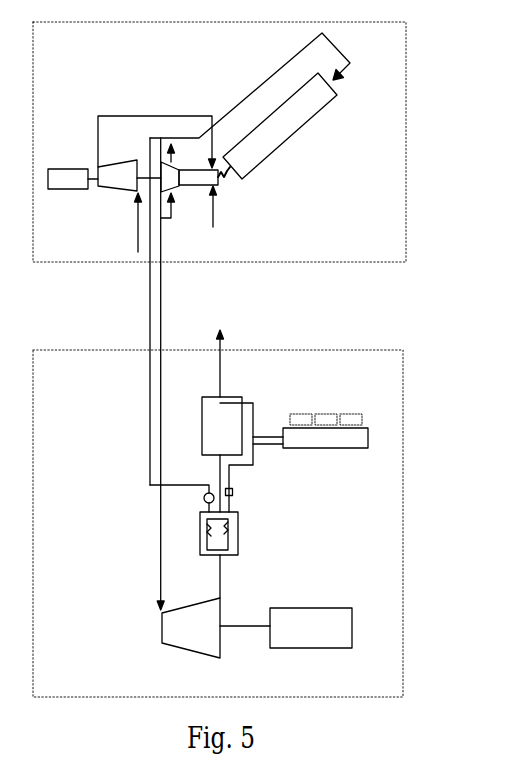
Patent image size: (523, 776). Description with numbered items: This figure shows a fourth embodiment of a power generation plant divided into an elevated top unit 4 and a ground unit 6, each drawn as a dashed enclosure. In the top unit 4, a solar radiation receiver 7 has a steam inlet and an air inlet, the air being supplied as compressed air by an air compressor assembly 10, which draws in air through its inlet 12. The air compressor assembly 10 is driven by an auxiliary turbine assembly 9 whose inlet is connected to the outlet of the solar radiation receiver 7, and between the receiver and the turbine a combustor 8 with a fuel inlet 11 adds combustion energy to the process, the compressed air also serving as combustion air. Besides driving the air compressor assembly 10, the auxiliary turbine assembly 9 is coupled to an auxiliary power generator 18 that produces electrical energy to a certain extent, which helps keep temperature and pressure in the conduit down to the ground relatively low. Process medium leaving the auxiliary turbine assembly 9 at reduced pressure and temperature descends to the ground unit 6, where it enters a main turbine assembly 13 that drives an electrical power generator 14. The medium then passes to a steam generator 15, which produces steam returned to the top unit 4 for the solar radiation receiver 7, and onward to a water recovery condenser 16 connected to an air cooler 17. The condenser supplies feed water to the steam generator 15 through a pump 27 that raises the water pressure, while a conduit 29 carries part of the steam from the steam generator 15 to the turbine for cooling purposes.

The top unit 4 is at (407, 147).
The ground unit 6 is at (405, 515).
The solar radiation receiver 7 is at (297, 117).
The combustor 8 is at (205, 187).
The auxiliary turbine assembly 9 is at (174, 183).
The air compressor assembly 10 is at (119, 187).
The fuel inlet 11 is at (217, 205).
The bleed air inlet 12 is at (133, 232).
The main turbine assembly 13 is at (190, 637).
The electrical power generator 14 is at (333, 610).
The steam generator 15 is at (230, 537).
The water recovery condenser 16 is at (232, 412).
The air cooler 17 is at (322, 442).
The auxiliary power generator 18 is at (72, 172).
The pump 27 is at (235, 493).
The conduit 29 is at (172, 217).